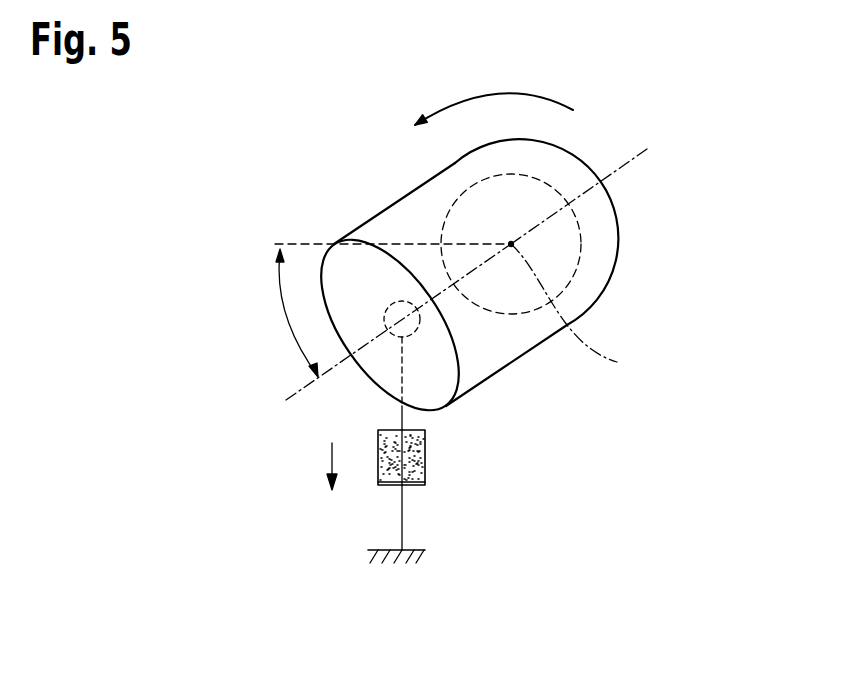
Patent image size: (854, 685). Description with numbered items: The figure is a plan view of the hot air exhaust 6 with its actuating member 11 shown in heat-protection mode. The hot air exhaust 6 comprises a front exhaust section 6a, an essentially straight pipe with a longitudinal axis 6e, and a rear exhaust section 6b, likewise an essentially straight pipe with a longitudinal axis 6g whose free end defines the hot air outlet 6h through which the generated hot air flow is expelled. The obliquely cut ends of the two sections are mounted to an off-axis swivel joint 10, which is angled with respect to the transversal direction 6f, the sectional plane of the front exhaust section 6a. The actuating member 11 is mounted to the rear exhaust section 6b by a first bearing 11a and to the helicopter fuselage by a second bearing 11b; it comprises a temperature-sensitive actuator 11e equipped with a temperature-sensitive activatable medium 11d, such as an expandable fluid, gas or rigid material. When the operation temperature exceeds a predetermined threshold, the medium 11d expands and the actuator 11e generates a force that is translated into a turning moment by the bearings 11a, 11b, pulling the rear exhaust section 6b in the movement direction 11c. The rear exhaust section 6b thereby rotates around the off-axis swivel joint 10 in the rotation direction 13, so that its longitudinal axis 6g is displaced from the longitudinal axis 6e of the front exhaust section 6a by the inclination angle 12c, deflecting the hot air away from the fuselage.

The hot air exhaust 6 is at (641, 201).
The first exhaust section 6a is at (541, 197).
The second exhaust section 6b is at (530, 351).
The longitudinal axis 6e is at (581, 315).
The transversal direction 6f is at (300, 246).
The longitudinal axis 6g is at (297, 392).
The hot air outlet 6h is at (366, 376).
The off-axis swivel joint 10 is at (581, 259).
The actuating member 11 is at (400, 353).
The first bearing 11a is at (392, 303).
The second bearing 11b is at (368, 550).
The movement direction 11c is at (332, 452).
The temperature-sensitive activatable medium 11d is at (425, 452).
The actuator 11e is at (377, 474).
The inclination angle 12c is at (280, 287).
The rotation direction 13 is at (491, 92).